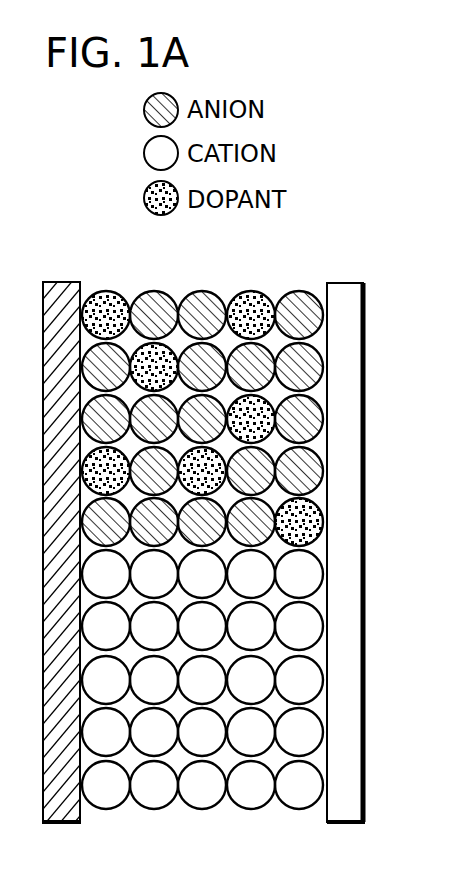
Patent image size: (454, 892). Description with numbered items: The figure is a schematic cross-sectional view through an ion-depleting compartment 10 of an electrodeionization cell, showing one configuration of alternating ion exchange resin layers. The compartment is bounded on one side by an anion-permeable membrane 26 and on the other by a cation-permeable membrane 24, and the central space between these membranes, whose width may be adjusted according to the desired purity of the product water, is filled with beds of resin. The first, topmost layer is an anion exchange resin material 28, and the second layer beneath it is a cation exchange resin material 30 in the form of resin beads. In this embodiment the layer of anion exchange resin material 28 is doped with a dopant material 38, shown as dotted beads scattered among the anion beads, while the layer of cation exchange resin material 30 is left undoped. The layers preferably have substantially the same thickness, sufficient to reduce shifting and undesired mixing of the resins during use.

The ion-depleting compartment 10 is at (106, 266).
The cation-permeable membrane 24 is at (350, 808).
The anion-permeable membrane 26 is at (63, 823).
The anion exchange resin material 28 is at (203, 305).
The cation exchange resin material 30 is at (307, 667).
The dopant material 38 is at (257, 293).